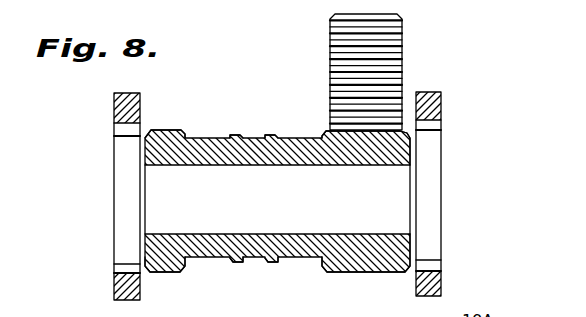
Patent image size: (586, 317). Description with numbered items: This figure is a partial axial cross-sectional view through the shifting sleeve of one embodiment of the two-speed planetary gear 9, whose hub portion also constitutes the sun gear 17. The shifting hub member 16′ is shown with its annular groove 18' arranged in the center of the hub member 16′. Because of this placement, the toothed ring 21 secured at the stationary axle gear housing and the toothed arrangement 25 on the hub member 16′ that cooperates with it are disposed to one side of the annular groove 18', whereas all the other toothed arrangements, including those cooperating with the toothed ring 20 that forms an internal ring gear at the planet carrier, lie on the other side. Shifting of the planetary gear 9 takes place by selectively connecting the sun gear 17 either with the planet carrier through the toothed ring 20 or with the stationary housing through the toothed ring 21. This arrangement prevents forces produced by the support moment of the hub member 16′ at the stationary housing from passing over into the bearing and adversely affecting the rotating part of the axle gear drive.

The two-speed planetary gear 9 is at (395, 56).
The sun gear 17 is at (326, 131).
The shifting hub member 16′ is at (219, 145).
The annular groove 18' is at (271, 180).
The toothed arrangement 25 is at (178, 131).
The toothed ring 20 is at (439, 100).
The toothed ring 21 is at (141, 110).